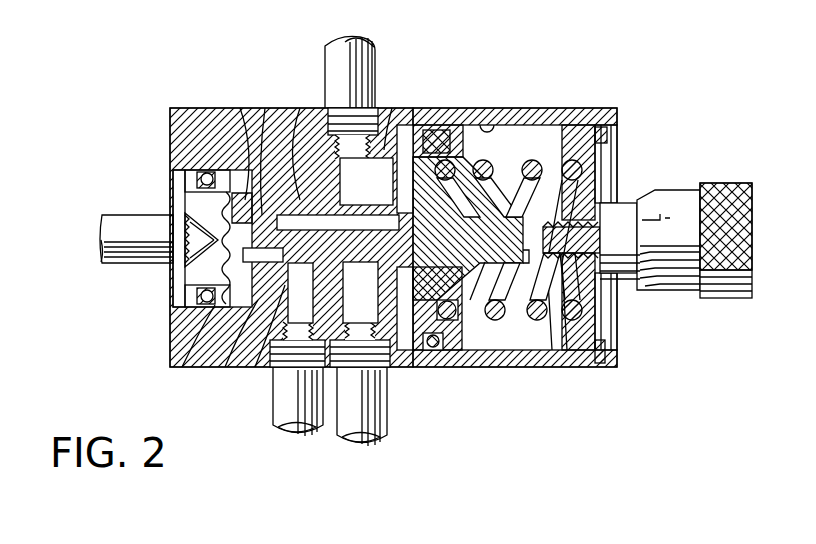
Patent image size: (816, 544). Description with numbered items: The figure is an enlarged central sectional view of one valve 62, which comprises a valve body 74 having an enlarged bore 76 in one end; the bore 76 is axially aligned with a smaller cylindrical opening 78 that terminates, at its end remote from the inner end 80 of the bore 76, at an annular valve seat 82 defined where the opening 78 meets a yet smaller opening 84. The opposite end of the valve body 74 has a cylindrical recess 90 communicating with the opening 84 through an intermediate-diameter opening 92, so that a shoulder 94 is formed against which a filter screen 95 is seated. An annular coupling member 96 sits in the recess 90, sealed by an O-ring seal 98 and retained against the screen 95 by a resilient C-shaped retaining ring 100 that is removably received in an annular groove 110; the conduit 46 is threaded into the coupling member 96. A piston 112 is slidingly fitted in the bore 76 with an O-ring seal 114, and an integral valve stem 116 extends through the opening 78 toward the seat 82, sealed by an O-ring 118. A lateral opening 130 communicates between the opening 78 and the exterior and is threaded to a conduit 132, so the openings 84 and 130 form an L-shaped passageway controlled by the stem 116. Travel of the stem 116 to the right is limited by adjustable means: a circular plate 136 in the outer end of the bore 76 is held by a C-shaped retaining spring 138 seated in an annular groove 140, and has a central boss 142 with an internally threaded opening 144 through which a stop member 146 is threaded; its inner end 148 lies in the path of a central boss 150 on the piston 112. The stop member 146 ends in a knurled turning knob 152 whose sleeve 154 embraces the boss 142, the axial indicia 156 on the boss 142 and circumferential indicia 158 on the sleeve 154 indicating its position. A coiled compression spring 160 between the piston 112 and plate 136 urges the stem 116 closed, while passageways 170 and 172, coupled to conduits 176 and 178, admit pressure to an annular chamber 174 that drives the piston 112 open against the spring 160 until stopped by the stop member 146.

The conduit 46 is at (110, 226).
The valve 62 is at (220, 108).
The valve body 74 is at (316, 237).
The enlarged bore 76 is at (495, 124).
The cylindrical opening 78 is at (302, 108).
The inner end of the bore 80 is at (405, 130).
The annular valve seat 82 is at (262, 367).
The axially aligned opening 84 is at (267, 108).
The cylindrical recess 90 is at (175, 170).
The opening 92 is at (195, 367).
The shoulder 94 is at (240, 150).
The filter screen 95 is at (232, 367).
The annular coupling member 96 is at (175, 265).
The O-ring seal 98 is at (222, 305).
The seal 100 is at (197, 181).
The annular groove 110 is at (197, 300).
The piston 112 is at (471, 228).
The O-ring seal 114 is at (432, 350).
The valve stem 116 is at (366, 181).
The O-ring 118 is at (362, 292).
The lateral opening 130 is at (278, 370).
The conduit 132 is at (288, 420).
The circular plate 136 is at (578, 150).
The retaining spring 138 is at (605, 150).
The annular groove 140 is at (600, 367).
The boss 142 is at (640, 218).
The internally threaded opening 144 is at (622, 215).
The stop member 146 is at (552, 350).
The inner end of the stop member 148 is at (522, 350).
The central boss 150 is at (520, 290).
The knurled turning knob 152 is at (730, 292).
The sleeve 154 is at (712, 195).
The axial indicia 156 is at (625, 290).
The circumferential indicia 158 is at (688, 210).
The coiled compression spring 160 is at (510, 195).
The passageway 170 is at (390, 115).
The passageway 172 is at (390, 350).
The annular chamber 174 is at (438, 130).
The conduit 176 is at (345, 60).
The conduit 178 is at (352, 430).